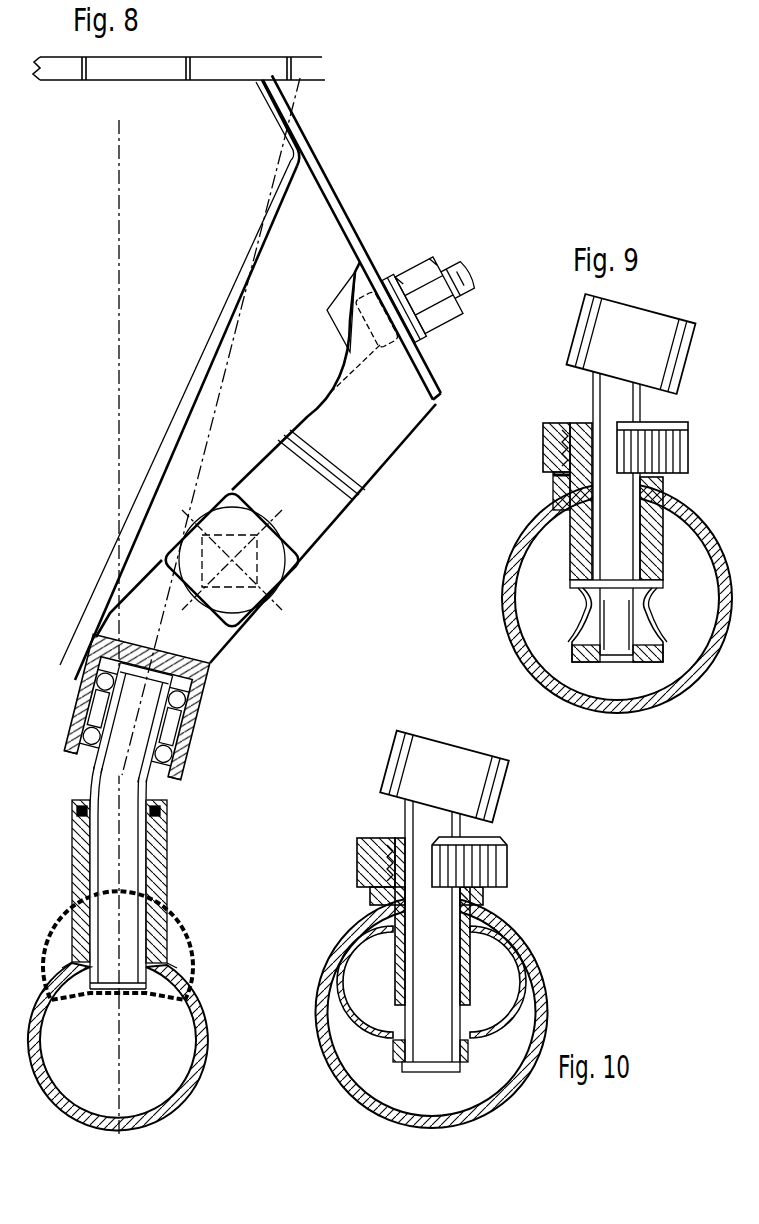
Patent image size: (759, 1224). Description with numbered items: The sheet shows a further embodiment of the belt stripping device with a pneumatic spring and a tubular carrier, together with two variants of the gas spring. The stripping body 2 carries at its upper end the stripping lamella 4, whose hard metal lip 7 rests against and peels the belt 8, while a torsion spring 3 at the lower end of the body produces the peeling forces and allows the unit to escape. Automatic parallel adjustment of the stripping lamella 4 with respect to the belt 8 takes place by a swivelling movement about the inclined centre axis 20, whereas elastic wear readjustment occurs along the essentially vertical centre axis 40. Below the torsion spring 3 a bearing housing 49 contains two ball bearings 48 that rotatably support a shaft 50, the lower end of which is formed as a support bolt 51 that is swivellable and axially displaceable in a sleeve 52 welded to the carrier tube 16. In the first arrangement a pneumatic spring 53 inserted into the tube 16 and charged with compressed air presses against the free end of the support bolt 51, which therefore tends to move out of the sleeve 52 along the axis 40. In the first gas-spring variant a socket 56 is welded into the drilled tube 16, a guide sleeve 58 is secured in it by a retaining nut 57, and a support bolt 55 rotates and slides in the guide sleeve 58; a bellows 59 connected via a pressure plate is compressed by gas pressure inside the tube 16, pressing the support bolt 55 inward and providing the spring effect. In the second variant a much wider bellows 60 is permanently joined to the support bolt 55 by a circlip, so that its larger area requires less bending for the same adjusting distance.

In FIG. 8, the stripping body 2 is at (360, 472).
In FIG. 8, the torsion spring 3 is at (283, 610).
In FIG. 8, the stripping lamella 4 is at (333, 192).
In FIG. 8, the hard metal lip 7 is at (268, 100).
In FIG. 8, the belt 8 is at (55, 81).
In FIG. 8, the tube 16 is at (57, 975).
In FIG. 9, the tube 16 is at (505, 578).
In FIG. 10, the tube 16 is at (328, 1048).
In FIG. 8, the centre axis 20 is at (252, 300).
In FIG. 8, the centre axis 40 is at (119, 168).
In FIG. 8, the ball bearings 48 is at (174, 768).
In FIG. 8, the bearing housing 49 is at (193, 715).
In FIG. 9, the bearing housing 49 is at (587, 325).
In FIG. 10, the bearing housing 49 is at (403, 752).
In FIG. 8, the shaft 50 is at (183, 740).
In FIG. 8, the support bolt 51 is at (132, 876).
In FIG. 8, the sleeve 52 is at (160, 845).
In FIG. 8, the pneumatic spring 53 is at (172, 985).
In FIG. 9, the support bolt 55 is at (597, 400).
In FIG. 10, the support bolt 55 is at (417, 825).
In FIG. 9, the socket 56 is at (553, 482).
In FIG. 10, the socket 56 is at (370, 895).
In FIG. 9, the retaining nut 57 is at (683, 425).
In FIG. 10, the retaining nut 57 is at (500, 863).
In FIG. 9, the guide sleeve 58 is at (580, 525).
In FIG. 10, the guide sleeve 58 is at (487, 905).
In FIG. 9, the bellows 59 is at (587, 604).
In FIG. 10, the bellows 60 is at (510, 968).